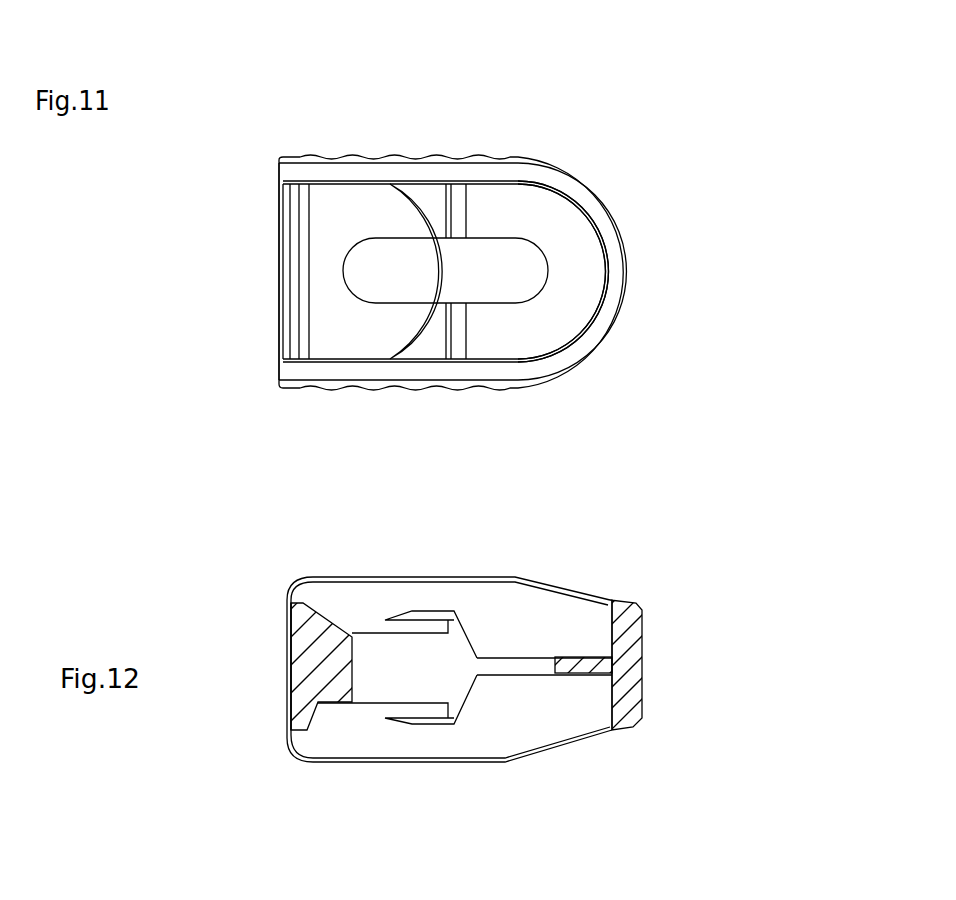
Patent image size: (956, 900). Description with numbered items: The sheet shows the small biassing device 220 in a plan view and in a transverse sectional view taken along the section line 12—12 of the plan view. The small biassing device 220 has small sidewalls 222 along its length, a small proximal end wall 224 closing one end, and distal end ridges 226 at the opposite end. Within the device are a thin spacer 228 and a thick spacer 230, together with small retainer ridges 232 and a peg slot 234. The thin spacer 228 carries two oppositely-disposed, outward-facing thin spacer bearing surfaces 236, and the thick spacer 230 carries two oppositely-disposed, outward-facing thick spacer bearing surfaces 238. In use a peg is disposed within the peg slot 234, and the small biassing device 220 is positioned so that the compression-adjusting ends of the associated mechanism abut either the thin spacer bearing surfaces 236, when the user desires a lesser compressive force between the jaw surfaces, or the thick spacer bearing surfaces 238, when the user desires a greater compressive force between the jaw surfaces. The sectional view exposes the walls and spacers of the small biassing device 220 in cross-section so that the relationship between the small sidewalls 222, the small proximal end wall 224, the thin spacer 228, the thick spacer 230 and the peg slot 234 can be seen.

In FIG. 11, the section line 12 is at (248, 273).
In FIG. 11, the small biassing device 220 is at (413, 65).
In FIG. 12, the small biassing device 220 is at (438, 828).
In FIG. 11, the small sidewalls 222 is at (330, 183).
In FIG. 12, the small sidewalls 222 is at (382, 455).
In FIG. 11, the small proximal end wall 224 is at (618, 267).
In FIG. 12, the small proximal end wall 224 is at (627, 663).
In FIG. 11, the distal end ridges 226 is at (293, 292).
In FIG. 12, the distal end ridges 226 is at (288, 713).
In FIG. 11, the thin spacer 228 is at (589, 299).
In FIG. 12, the thin spacer 228 is at (615, 653).
In FIG. 11, the thick spacer 230 is at (317, 338).
In FIG. 12, the thick spacer 230 is at (317, 627).
In FIG. 11, the small retainer ridges 232 is at (458, 343).
In FIG. 12, the small retainer ridges 232 is at (452, 615).
In FIG. 11, the peg slot 234 is at (492, 277).
In FIG. 12, the peg slot 234 is at (512, 667).
In FIG. 11, the thin spacer bearing surfaces 236 is at (550, 320).
In FIG. 12, the thin spacer bearing surfaces 236 is at (565, 658).
In FIG. 11, the thick spacer bearing surfaces 238 is at (333, 347).
In FIG. 12, the thick spacer bearing surfaces 238 is at (340, 647).